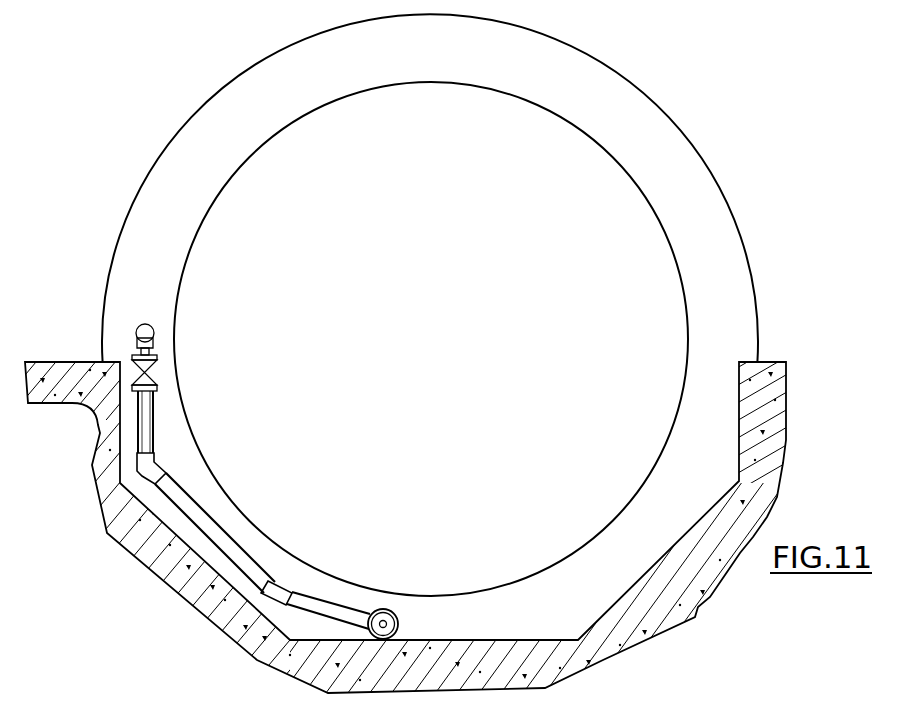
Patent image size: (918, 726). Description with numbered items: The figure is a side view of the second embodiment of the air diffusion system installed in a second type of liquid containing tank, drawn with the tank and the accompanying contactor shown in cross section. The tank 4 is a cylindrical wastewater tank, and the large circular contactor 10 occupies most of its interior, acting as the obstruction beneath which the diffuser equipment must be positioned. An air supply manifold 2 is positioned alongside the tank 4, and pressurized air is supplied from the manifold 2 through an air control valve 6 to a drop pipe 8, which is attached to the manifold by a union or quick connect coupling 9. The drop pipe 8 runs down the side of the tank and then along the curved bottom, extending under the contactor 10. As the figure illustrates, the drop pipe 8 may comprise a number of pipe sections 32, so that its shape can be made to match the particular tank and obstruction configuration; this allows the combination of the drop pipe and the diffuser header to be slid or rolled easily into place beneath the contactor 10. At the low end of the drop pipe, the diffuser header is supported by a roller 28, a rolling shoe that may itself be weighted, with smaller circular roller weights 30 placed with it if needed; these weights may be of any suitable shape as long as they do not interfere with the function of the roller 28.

The contactor 10 is at (609, 188).
The tank 4 is at (775, 393).
The air supply manifold 2 is at (142, 326).
The air control valve 6 is at (147, 372).
The union or quick connect coupling 9 is at (142, 392).
The drop pipe 8 is at (172, 462).
The pipe sections 32 is at (228, 541).
The roller 28 is at (381, 609).
The roller weights 30 is at (398, 621).